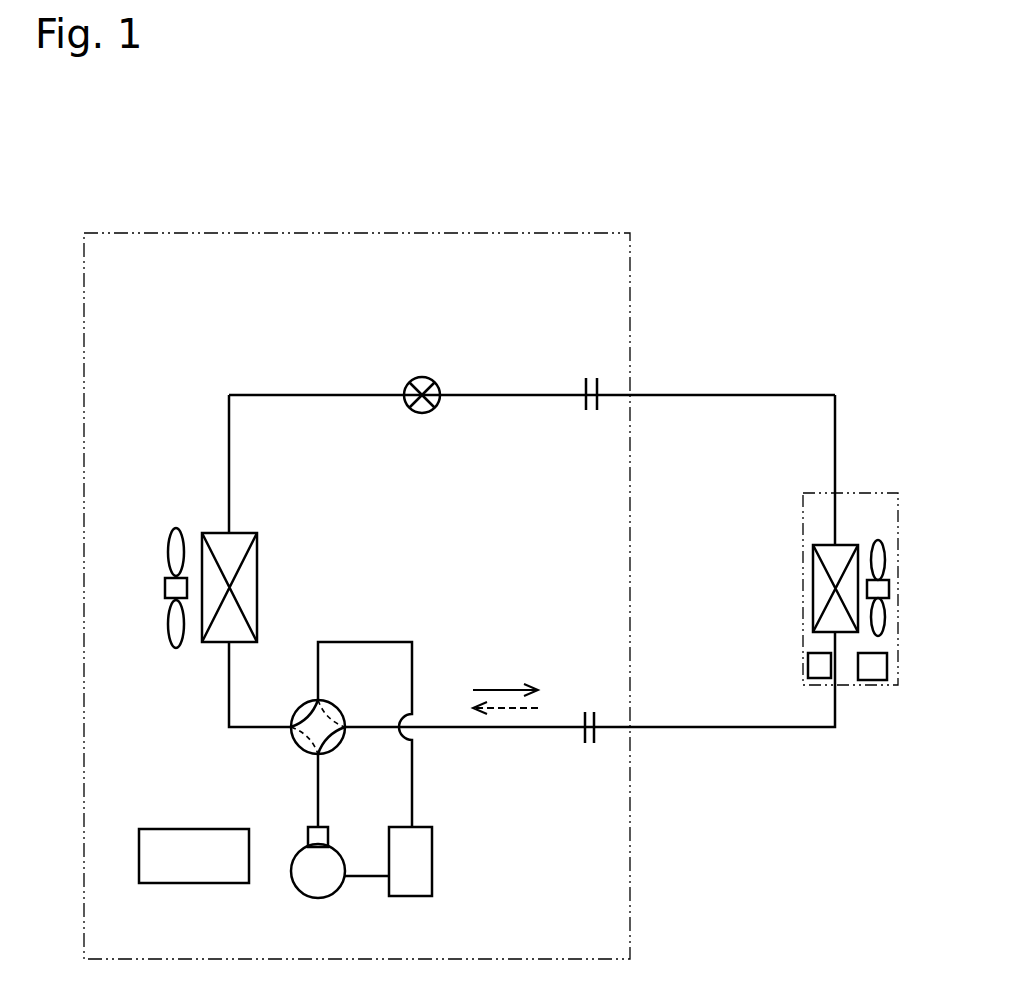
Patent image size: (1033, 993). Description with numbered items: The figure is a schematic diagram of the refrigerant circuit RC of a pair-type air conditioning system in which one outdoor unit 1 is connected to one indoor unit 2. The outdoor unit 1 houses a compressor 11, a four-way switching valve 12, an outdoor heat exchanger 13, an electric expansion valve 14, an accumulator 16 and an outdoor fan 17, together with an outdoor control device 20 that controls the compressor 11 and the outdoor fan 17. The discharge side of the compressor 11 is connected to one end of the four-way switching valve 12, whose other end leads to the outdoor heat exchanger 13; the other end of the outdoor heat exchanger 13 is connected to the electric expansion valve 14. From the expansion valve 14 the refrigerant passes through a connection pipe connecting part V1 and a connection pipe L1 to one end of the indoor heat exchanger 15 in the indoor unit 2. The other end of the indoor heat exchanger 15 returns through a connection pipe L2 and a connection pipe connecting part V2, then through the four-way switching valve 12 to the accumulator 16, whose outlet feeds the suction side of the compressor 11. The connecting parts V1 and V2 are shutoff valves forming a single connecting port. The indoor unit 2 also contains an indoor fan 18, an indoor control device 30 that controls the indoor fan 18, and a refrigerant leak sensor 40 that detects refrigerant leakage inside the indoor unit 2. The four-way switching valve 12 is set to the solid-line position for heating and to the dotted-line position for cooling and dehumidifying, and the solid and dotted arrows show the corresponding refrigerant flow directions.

The outdoor unit 1 is at (188, 222).
The indoor unit 2 is at (862, 488).
The compressor 11 is at (316, 887).
The four-way switching valve 12 is at (304, 700).
The outdoor heat exchanger 13 is at (252, 555).
The electric expansion valve 14 is at (440, 392).
The indoor heat exchanger 15 is at (817, 585).
The accumulator 16 is at (412, 884).
The outdoor fan 17 is at (165, 585).
The indoor fan 18 is at (882, 588).
The outdoor control device 20 is at (200, 870).
The indoor control device 30 is at (872, 680).
The refrigerant leak sensor 40 is at (820, 664).
The connection pipe connecting part V1 is at (598, 404).
The connection pipe connecting part V2 is at (596, 735).
The connection pipe L1 is at (688, 395).
The connection pipe L2 is at (716, 728).
The refrigerant circuit RC is at (743, 392).